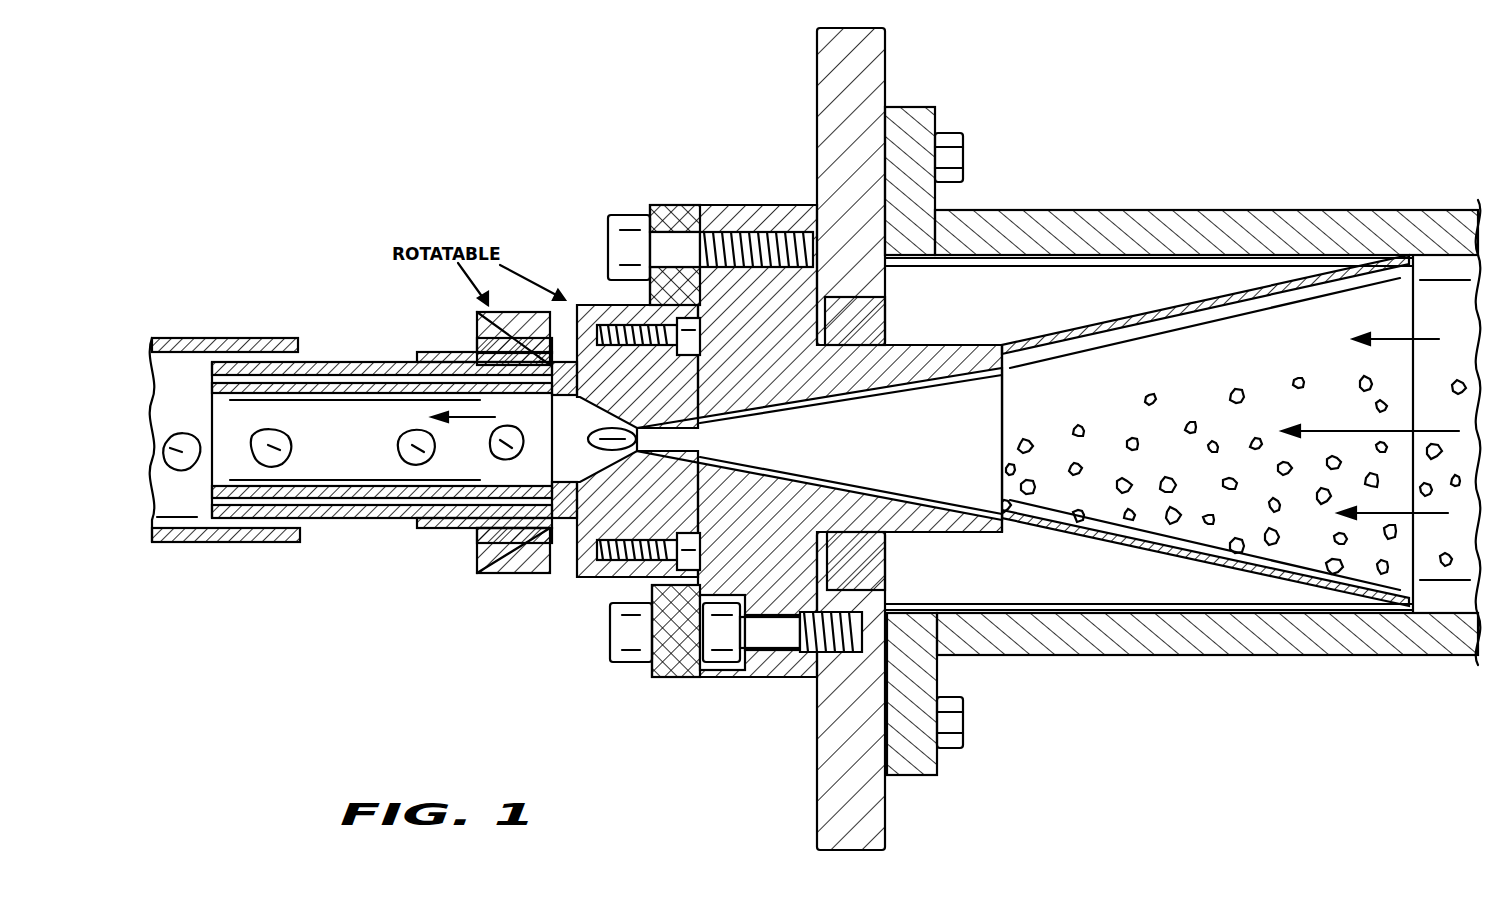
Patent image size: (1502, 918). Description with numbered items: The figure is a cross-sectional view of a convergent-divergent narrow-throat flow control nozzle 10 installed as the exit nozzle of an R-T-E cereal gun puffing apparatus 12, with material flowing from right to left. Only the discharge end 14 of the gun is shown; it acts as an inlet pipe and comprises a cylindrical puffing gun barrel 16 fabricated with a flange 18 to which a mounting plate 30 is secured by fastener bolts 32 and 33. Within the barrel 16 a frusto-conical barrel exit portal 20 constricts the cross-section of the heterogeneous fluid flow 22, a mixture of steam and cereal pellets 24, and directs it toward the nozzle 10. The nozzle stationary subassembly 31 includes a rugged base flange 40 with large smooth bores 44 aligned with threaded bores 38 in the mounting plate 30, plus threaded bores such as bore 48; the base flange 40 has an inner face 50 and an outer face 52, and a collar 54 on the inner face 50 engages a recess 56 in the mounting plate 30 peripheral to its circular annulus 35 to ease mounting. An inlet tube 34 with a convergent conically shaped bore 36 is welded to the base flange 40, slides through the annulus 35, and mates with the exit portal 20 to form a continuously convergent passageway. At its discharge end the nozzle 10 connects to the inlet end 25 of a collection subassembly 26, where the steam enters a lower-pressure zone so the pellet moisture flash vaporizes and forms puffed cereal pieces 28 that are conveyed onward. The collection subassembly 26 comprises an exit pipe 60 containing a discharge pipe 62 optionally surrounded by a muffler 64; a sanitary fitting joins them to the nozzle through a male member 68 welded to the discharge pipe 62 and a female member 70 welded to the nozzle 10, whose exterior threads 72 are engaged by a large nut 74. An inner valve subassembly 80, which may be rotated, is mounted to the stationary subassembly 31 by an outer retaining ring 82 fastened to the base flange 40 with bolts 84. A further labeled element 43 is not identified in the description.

The nozzle 10 is at (692, 178).
The gun puffing apparatus 12 is at (1182, 422).
The discharge end 14 is at (1068, 203).
The puffing gun barrel 16 is at (1150, 208).
The flange 18 is at (922, 107).
The barrel exit portal 20 is at (1305, 288).
The heterogeneous fluid flow 22 is at (1179, 430).
The cereal pellets 24 is at (1190, 425).
The inlet end 25 is at (475, 490).
The collection subassembly 26 is at (382, 439).
The puffed R-T-E cereal pieces 28 is at (292, 446).
The mounting plate 30 is at (872, 52).
The nozzle stationary subassembly 31 is at (727, 198).
The fastener bolt 32 is at (967, 150).
The fastener bolt 33 is at (967, 720).
The inlet tube 34 is at (1008, 340).
The circular annulus 35 is at (950, 347).
The convergent conically shaped bore 36 is at (1003, 532).
The threaded bores 38 is at (905, 600).
The base flange 40 is at (857, 435).
The bolt 43 is at (728, 652).
The smooth bores 44 is at (762, 644).
The threaded bore 48 is at (748, 232).
The inner face 50 is at (823, 212).
The outer face 52 is at (678, 205).
The collar 54 is at (857, 441).
The recess 56 is at (872, 300).
The exit pipe 60 is at (207, 338).
The discharge pipe 62 is at (382, 430).
The muffler 64 is at (337, 360).
The male member 68 is at (480, 360).
The female member 70 is at (478, 312).
The exterior threads 72 is at (512, 574).
The large nut 74 is at (528, 312).
The inner valve subassembly 80 is at (590, 305).
The outer retaining ring 82 is at (711, 201).
The bolts 84 is at (612, 225).